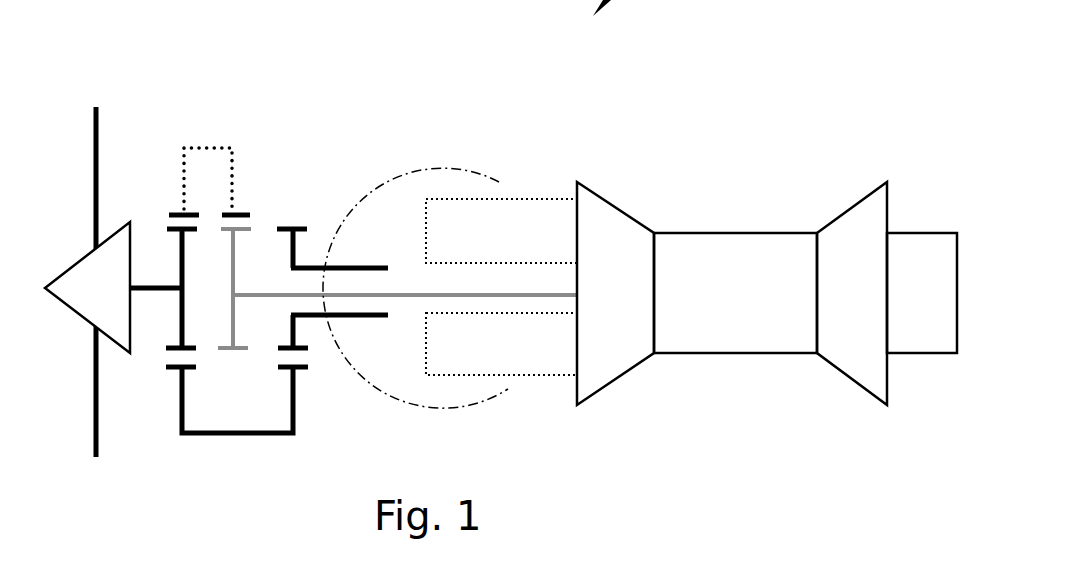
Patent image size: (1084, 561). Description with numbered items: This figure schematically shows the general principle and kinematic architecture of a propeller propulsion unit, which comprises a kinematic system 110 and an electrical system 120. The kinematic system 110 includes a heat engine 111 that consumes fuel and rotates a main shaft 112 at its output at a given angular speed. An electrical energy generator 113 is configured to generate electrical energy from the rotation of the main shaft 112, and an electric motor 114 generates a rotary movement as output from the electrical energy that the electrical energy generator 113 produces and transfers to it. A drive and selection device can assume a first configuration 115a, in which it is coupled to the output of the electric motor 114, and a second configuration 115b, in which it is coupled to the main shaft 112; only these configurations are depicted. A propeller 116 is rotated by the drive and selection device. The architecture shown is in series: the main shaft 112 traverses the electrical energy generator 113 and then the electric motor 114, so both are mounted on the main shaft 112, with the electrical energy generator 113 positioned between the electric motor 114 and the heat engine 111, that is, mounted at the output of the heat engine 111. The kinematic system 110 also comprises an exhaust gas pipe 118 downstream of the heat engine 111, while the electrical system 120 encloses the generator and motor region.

The kinematic system 110 is at (753, 128).
The heat engine 111 is at (716, 311).
The main shaft 112 is at (520, 292).
The electrical energy generator 113 is at (475, 212).
The electric motor 114 is at (357, 266).
The first configuration 115a is at (215, 437).
The second configuration 115b is at (205, 148).
The propeller 116 is at (115, 301).
The exhaust gas pipe 118 is at (900, 311).
The electrical system 120 is at (398, 173).